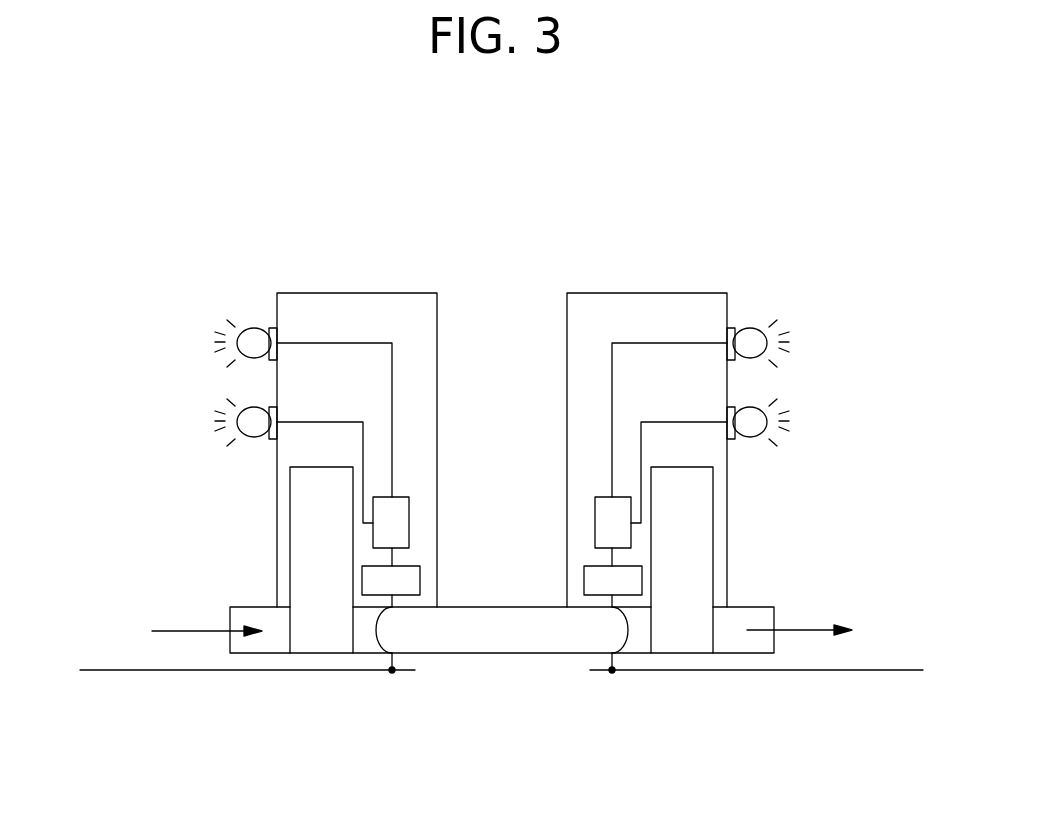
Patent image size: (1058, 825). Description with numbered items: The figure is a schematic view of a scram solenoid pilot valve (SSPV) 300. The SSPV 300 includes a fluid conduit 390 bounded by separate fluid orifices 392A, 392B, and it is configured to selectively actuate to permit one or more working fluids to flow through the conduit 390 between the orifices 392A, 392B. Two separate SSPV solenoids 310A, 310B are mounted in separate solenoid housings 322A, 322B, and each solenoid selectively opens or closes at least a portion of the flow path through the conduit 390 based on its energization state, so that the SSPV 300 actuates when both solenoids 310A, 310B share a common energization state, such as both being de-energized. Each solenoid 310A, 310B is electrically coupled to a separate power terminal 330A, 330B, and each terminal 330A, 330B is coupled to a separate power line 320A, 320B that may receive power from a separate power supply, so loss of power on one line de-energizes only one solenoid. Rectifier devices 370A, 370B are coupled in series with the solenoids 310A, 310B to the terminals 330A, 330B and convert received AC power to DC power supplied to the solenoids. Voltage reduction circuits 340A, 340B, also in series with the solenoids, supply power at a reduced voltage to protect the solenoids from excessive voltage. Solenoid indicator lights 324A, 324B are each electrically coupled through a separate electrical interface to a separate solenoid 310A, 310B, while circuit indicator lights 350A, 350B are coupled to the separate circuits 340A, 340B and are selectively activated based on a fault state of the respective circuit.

The scram solenoid pilot valve 300 is at (323, 229).
The solenoid housing 322A is at (300, 293).
The solenoid housing 322B is at (702, 293).
The circuit indicator light 350A is at (227, 320).
The circuit indicator light 350B is at (777, 320).
The solenoid indicator light 324A is at (230, 423).
The solenoid indicator light 324B is at (772, 423).
The SSPV solenoid 310A is at (310, 513).
The SSPV solenoid 310B is at (695, 513).
The voltage reduction circuit 340A is at (390, 512).
The voltage reduction circuit 340B is at (612, 530).
The fluid conduit 390 is at (264, 612).
The rectifier device 370A is at (370, 586).
The rectifier device 370B is at (640, 586).
The power terminal 330A is at (392, 661).
The power terminal 330B is at (613, 661).
The power line 320A is at (338, 671).
The power line 320B is at (660, 672).
The fluid orifice 392A is at (229, 656).
The fluid orifice 392B is at (776, 655).